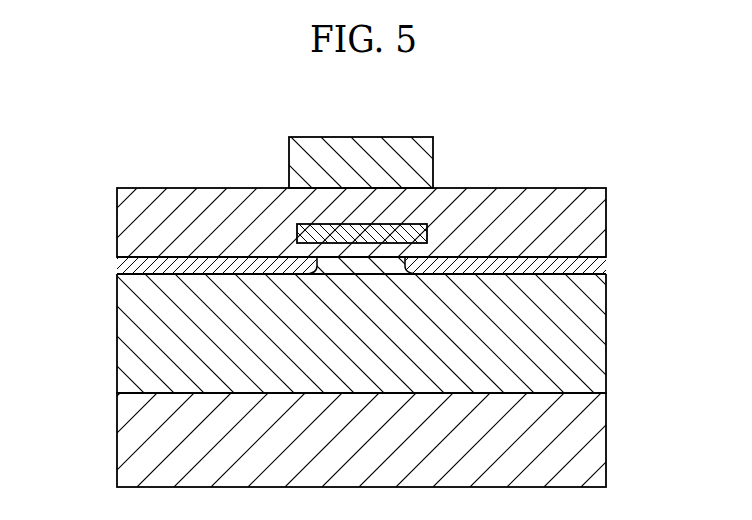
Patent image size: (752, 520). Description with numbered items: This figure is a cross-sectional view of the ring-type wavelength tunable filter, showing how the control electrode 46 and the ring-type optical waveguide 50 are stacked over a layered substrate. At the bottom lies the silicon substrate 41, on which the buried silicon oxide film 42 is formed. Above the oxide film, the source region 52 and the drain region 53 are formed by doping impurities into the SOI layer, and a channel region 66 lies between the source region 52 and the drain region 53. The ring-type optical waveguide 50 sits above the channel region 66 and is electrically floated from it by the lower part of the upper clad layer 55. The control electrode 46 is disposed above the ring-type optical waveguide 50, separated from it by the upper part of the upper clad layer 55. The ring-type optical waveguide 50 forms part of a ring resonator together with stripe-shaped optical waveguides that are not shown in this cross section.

The silicon substrate 41 is at (127, 437).
The buried silicon oxide film 42 is at (128, 327).
The control electrode 46 is at (372, 137).
The ring-type optical waveguide 50 is at (313, 230).
The source region 52 is at (125, 263).
The drain region 53 is at (597, 265).
The upper clad layer 55 is at (602, 218).
The channel region 66 is at (405, 265).